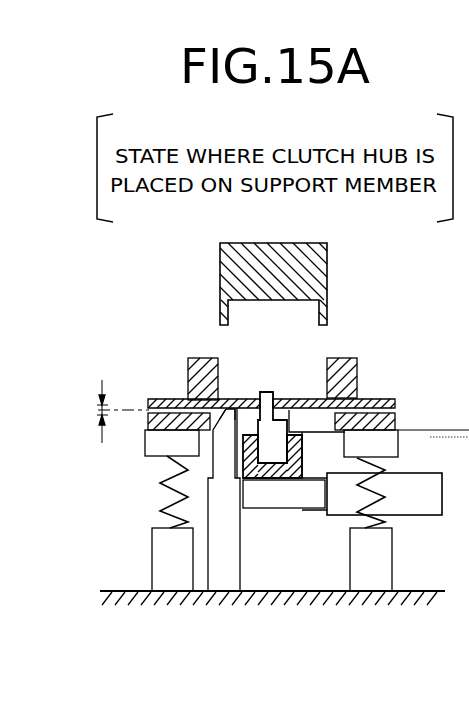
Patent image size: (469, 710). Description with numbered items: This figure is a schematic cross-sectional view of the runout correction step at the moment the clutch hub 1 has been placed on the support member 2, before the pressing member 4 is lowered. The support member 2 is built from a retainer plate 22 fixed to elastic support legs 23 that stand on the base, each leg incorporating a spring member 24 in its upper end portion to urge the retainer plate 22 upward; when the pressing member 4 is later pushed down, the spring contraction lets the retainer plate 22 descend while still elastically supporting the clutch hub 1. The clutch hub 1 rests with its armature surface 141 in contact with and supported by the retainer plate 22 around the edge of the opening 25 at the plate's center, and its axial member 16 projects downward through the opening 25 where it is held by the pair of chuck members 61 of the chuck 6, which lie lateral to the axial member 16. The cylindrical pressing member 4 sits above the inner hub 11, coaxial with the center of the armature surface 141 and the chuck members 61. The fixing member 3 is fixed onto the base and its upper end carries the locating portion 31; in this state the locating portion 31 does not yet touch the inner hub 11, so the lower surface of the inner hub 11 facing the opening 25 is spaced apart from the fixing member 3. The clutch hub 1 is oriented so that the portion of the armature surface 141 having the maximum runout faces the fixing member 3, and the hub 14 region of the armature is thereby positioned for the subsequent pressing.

The clutch hub 1 is at (164, 397).
The support member 2 is at (148, 566).
The fixing member 3 is at (229, 556).
The pressing member 4 is at (220, 263).
The chuck 6 is at (410, 517).
The inner hub 11 is at (298, 398).
The holding member 14 is at (398, 416).
The axial member 16 is at (257, 468).
The retainer plate 22 is at (352, 447).
The elastic support legs 23 is at (152, 549).
The spring member 24 is at (168, 497).
The opening 25 is at (362, 396).
The locating portion 31 is at (230, 408).
The chuck members 61 is at (276, 468).
The armature surface 141 is at (203, 430).